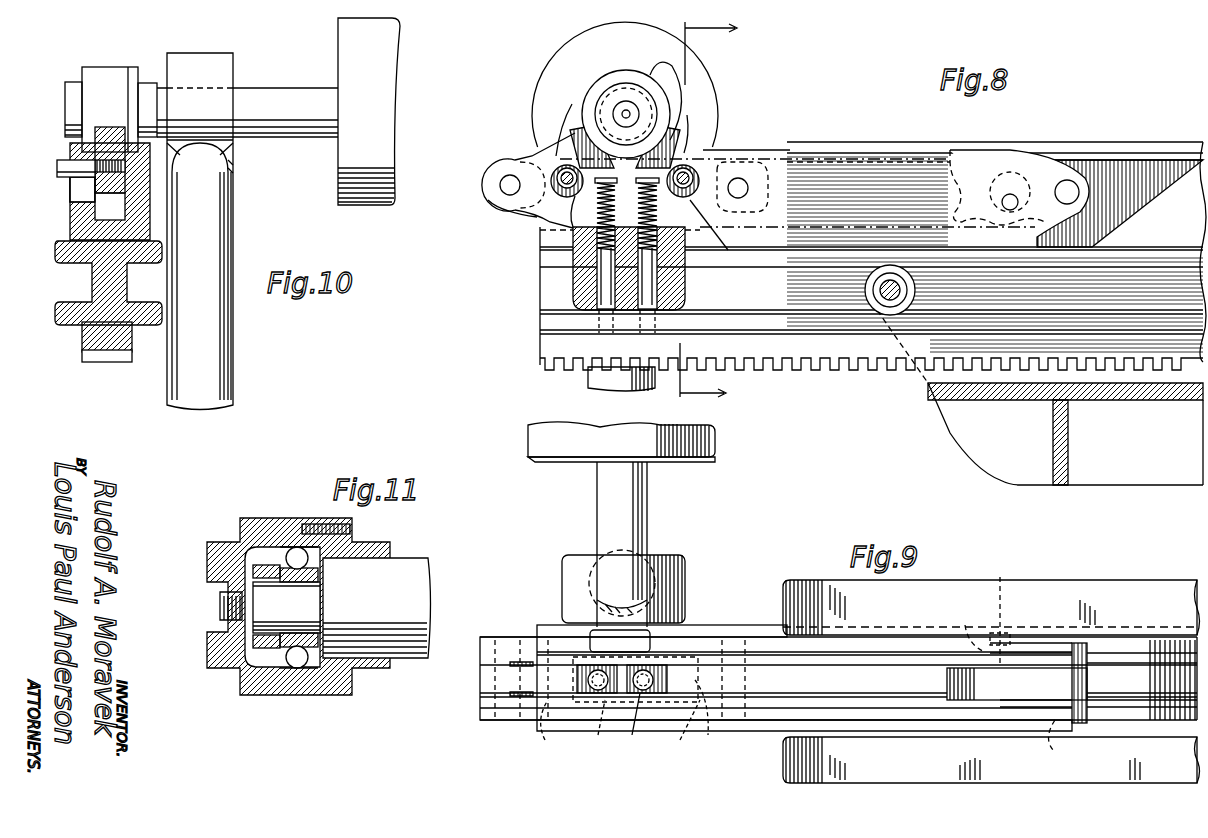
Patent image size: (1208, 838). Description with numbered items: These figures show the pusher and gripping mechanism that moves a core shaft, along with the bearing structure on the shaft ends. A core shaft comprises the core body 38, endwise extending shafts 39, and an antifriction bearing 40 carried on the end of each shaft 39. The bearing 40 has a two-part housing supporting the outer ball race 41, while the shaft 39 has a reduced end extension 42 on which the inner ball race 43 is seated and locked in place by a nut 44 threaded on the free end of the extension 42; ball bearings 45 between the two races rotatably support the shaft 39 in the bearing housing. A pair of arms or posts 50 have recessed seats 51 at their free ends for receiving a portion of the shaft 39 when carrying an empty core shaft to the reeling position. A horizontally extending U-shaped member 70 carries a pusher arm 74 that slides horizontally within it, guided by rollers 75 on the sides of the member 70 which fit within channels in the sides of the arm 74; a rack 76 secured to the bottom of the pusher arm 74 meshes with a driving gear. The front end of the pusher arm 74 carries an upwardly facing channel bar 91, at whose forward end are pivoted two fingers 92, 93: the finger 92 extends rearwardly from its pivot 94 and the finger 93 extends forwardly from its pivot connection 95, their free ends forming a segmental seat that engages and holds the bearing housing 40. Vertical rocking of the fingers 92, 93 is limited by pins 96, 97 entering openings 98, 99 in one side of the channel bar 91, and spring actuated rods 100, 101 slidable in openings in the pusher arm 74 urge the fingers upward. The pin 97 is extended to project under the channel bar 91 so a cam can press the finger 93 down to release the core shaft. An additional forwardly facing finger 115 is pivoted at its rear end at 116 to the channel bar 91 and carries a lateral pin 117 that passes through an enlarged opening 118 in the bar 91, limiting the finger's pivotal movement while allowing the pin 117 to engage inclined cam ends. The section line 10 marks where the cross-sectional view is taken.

In FIG. 8, the section line 10 is at (723, 210).
In FIG. 10, the core body 38 is at (400, 42).
In FIG. 8, the core body 38 is at (560, 62).
In FIG. 9, the core body 38 is at (717, 450).
In FIG. 10, the shaft 39 is at (276, 95).
In FIG. 9, the shaft 39 is at (648, 510).
In FIG. 11, the shaft 39 is at (415, 564).
In FIG. 10, the antifriction bearing 40 is at (100, 67).
In FIG. 8, the antifriction bearing 40 is at (612, 100).
In FIG. 9, the antifriction bearing 40 is at (665, 650).
In FIG. 11, the antifriction bearing 40 is at (272, 518).
In FIG. 11, the outer ball race 41 is at (287, 673).
In FIG. 11, the reduced end extension 42 is at (290, 598).
In FIG. 11, the inner ball race 43 is at (322, 590).
In FIG. 11, the nut 44 is at (262, 568).
In FIG. 11, the ball bearings 45 is at (295, 548).
In FIG. 10, the arm or post 50 is at (235, 213).
In FIG. 8, the arm or post 50 is at (588, 378).
In FIG. 9, the arm or post 50 is at (612, 556).
In FIG. 10, the recessed seat 51 is at (238, 152).
In FIG. 8, the recessed seat 51 is at (657, 105).
In FIG. 9, the recessed seat 51 is at (575, 556).
In FIG. 8, the U-shaped member 70 is at (928, 393).
In FIG. 9, the U-shaped member 70 is at (1128, 585).
In FIG. 10, the pusher arm 74 is at (65, 255).
In FIG. 8, the pusher arm 74 is at (1160, 245).
In FIG. 9, the pusher arm 74 is at (1155, 672).
In FIG. 8, the roller 75 is at (917, 290).
In FIG. 10, the rack 76 is at (107, 353).
In FIG. 8, the rack 76 is at (815, 372).
In FIG. 10, the channel bar 91 is at (72, 215).
In FIG. 8, the channel bar 91 is at (780, 148).
In FIG. 9, the channel bar 91 is at (780, 735).
In FIG. 8, the finger 92 is at (553, 143).
In FIG. 9, the finger 92 is at (548, 700).
In FIG. 10, the finger 93 is at (95, 135).
In FIG. 8, the finger 93 is at (700, 160).
In FIG. 9, the finger 93 is at (708, 735).
In FIG. 8, the pivot 94 is at (505, 184).
In FIG. 9, the pivot 94 is at (500, 722).
In FIG. 8, the pivot connection 95 is at (740, 180).
In FIG. 9, the pivot connection 95 is at (735, 718).
In FIG. 8, the pin 96 is at (561, 172).
In FIG. 9, the pin 96 is at (580, 700).
In FIG. 10, the pin 97 is at (60, 165).
In FIG. 8, the pin 97 is at (689, 172).
In FIG. 9, the pin 97 is at (665, 700).
In FIG. 8, the opening 98 is at (537, 220).
In FIG. 9, the opening 98 is at (545, 740).
In FIG. 10, the opening 99 is at (72, 189).
In FIG. 8, the opening 99 is at (728, 250).
In FIG. 9, the opening 99 is at (680, 740).
In FIG. 8, the spring actuated rod 100 is at (604, 268).
In FIG. 9, the spring actuated rod 100 is at (598, 735).
In FIG. 8, the spring actuated rod 101 is at (668, 278).
In FIG. 9, the spring actuated rod 101 is at (632, 735).
In FIG. 8, the forwardly facing finger 115 is at (1030, 160).
In FIG. 9, the forwardly facing finger 115 is at (990, 690).
In FIG. 8, the pivot 116 is at (1070, 185).
In FIG. 9, the pivot 116 is at (1055, 752).
In FIG. 8, the pin 117 is at (1012, 200).
In FIG. 9, the pin 117 is at (1005, 608).
In FIG. 8, the enlarged opening 118 is at (1000, 178).
In FIG. 9, the enlarged opening 118 is at (965, 625).